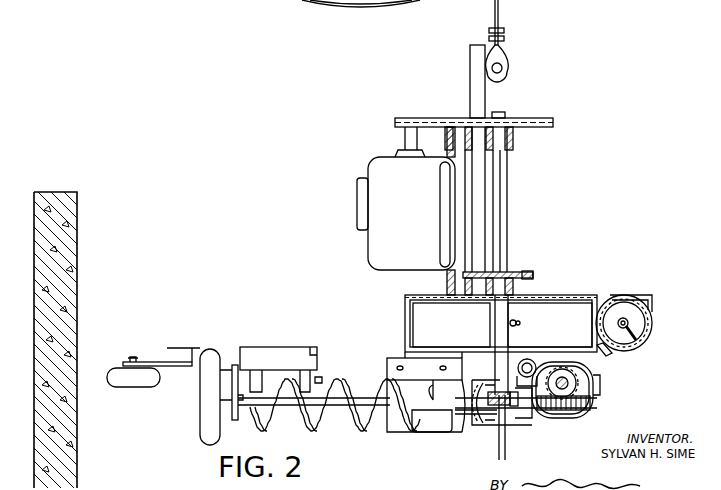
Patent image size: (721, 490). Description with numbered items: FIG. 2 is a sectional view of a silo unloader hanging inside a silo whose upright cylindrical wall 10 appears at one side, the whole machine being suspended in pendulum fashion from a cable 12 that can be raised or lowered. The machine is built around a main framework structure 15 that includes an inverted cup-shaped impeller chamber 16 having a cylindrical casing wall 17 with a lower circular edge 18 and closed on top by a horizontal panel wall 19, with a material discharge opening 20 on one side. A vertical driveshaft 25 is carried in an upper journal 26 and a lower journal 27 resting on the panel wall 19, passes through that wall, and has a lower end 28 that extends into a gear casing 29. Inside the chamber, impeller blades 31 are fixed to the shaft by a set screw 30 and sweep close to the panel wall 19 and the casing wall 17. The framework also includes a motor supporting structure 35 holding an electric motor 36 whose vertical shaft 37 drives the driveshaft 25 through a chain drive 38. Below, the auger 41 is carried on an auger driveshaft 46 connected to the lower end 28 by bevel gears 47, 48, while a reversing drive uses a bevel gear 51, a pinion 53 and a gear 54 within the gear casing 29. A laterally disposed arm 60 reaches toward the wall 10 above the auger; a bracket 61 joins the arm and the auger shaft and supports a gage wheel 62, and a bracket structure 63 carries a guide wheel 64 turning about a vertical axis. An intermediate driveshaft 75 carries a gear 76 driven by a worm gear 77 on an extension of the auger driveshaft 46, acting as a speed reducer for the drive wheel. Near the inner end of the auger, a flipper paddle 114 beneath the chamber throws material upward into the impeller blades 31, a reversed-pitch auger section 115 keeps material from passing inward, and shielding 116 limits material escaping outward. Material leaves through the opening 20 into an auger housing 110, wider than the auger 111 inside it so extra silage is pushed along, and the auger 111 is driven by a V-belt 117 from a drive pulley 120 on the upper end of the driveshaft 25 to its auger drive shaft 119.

The cylindrical wall 10 is at (77, 320).
The cable 12 is at (498, 12).
The main framework structure 15 is at (462, 89).
The impeller chamber 16 is at (448, 292).
The cylindrical casing wall 17 is at (412, 310).
The lower circular edge 18 is at (395, 350).
The panel wall 19 is at (415, 296).
The material discharge opening 20 is at (606, 348).
The driveshaft 25 is at (500, 193).
The upper journal 26 is at (513, 142).
The lower journal 27 is at (517, 276).
The lower end 28 is at (504, 358).
The gear casing 29 is at (535, 420).
The set screw 30 is at (516, 323).
The impeller blades 31 is at (405, 303).
The motor supporting structure 35 is at (445, 142).
The electric motor 36 is at (380, 207).
The vertical shaft 37 is at (405, 135).
The chain drive 38 is at (421, 118).
The auger 41 is at (366, 432).
The auger driveshaft 46 is at (488, 425).
The bevel gear 47 is at (523, 412).
The bevel gear 48 is at (490, 393).
The bevel gear 51 is at (498, 418).
The pinion 53 is at (509, 416).
The gear 54 is at (480, 430).
The arm 60 is at (328, 380).
The bracket 61 is at (234, 363).
The gage wheel 62 is at (215, 339).
The bracket structure 63 is at (272, 350).
The guide wheel 64 is at (116, 368).
The intermediate driveshaft 75 is at (580, 388).
The gear 76 is at (595, 380).
The worm gear 77 is at (576, 411).
The auger housing 110 is at (652, 323).
The auger 111 is at (632, 310).
The flipper paddle 114 is at (428, 432).
The auger section 115 is at (463, 413).
The shielding 116 is at (395, 370).
The V-belt 117 is at (531, 274).
The auger drive shaft 119 is at (622, 317).
The drive pulley 120 is at (500, 270).